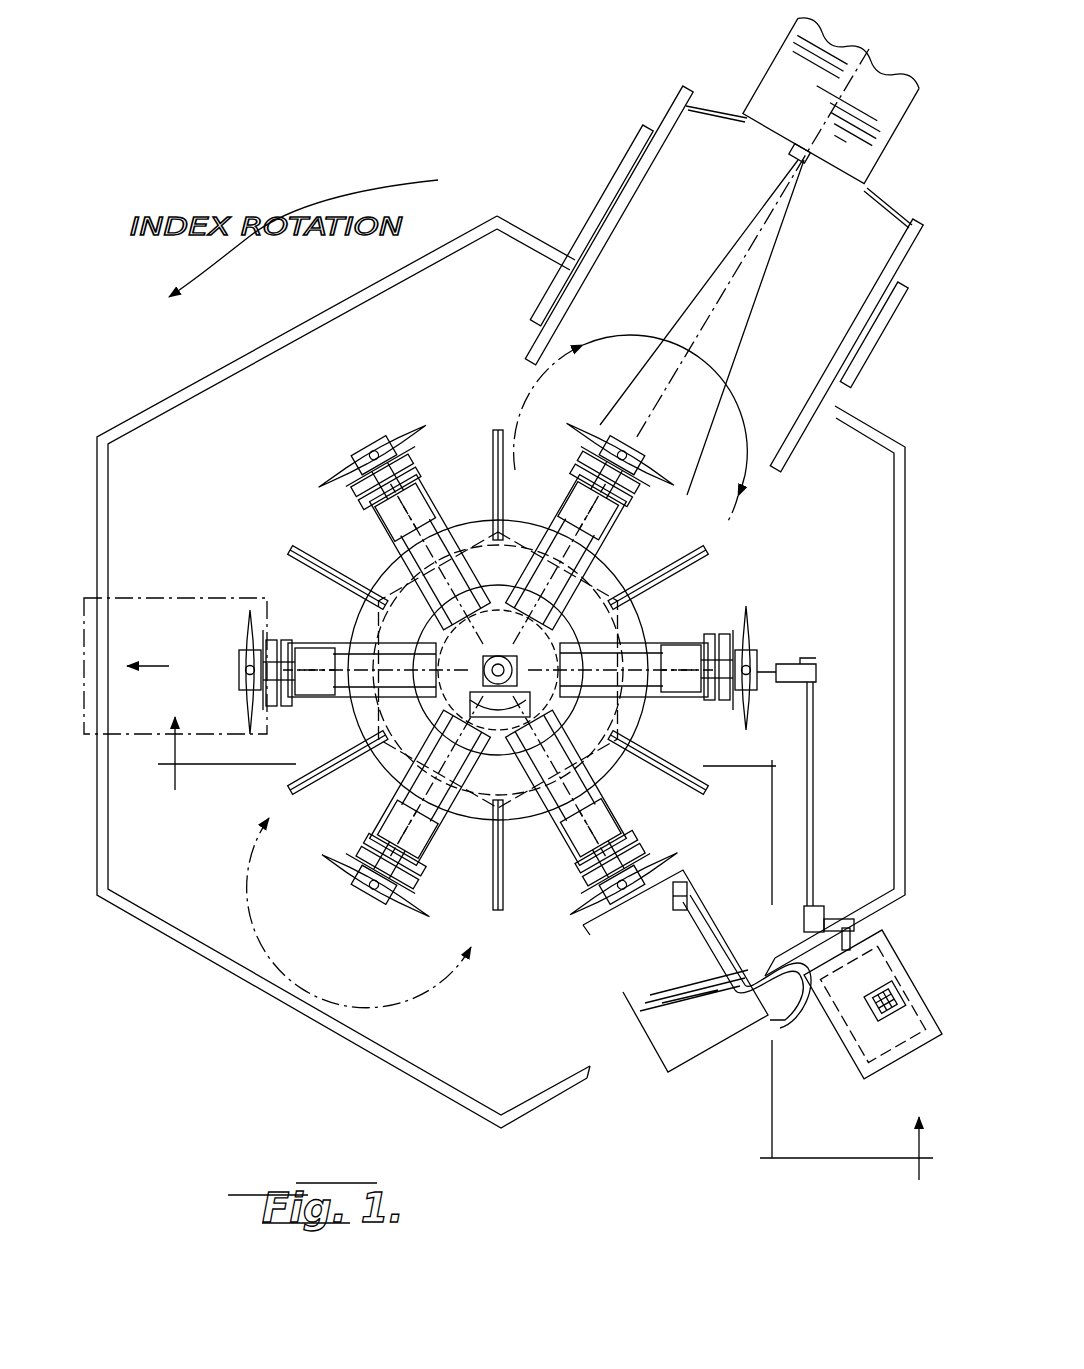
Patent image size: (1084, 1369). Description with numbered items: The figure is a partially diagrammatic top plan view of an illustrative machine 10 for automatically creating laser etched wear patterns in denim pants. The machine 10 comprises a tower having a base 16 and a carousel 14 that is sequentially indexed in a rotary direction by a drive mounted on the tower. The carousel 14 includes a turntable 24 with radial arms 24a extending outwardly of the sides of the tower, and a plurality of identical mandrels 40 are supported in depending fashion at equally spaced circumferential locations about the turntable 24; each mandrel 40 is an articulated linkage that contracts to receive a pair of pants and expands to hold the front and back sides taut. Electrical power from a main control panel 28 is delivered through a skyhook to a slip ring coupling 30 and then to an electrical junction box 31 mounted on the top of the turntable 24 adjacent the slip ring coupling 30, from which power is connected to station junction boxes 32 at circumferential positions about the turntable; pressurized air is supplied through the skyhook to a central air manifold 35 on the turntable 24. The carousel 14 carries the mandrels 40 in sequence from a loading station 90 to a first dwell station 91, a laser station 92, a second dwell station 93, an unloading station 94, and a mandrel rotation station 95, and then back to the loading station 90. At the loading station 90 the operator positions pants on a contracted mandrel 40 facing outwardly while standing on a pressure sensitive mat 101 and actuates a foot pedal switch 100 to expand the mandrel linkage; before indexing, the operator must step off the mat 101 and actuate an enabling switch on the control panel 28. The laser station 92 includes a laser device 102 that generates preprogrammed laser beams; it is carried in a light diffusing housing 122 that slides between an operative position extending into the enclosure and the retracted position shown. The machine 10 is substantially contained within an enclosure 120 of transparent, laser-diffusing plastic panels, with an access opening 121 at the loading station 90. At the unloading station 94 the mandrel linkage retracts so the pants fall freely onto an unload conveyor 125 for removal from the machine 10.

The machine 10 is at (204, 847).
The carousel 14 is at (383, 777).
The base 16 is at (298, 550).
The turntable 24 is at (355, 735).
The radial arms 24a is at (376, 511).
The main control panel 28 is at (850, 1055).
The slip ring coupling 30 is at (622, 640).
The electrical junction box 31 is at (510, 765).
The station junction boxes 32 is at (418, 503).
The central air manifold 35 is at (503, 530).
The mandrels 40 is at (333, 470).
The loading station 90 is at (587, 993).
The first dwell station 91 is at (845, 582).
The laser station 92 is at (747, 205).
The second dwell station 93 is at (418, 398).
The unloading station 94 is at (204, 604).
The mandrel rotation station 95 is at (290, 952).
The foot pedal switch 100 is at (688, 893).
The pressure sensitive mat 101 is at (657, 1015).
The laser device 102 is at (778, 62).
The enclosure 120 is at (212, 375).
The access opening 121 is at (590, 1072).
The light diffusing housing 122 is at (610, 192).
The unload conveyor 125 is at (178, 598).